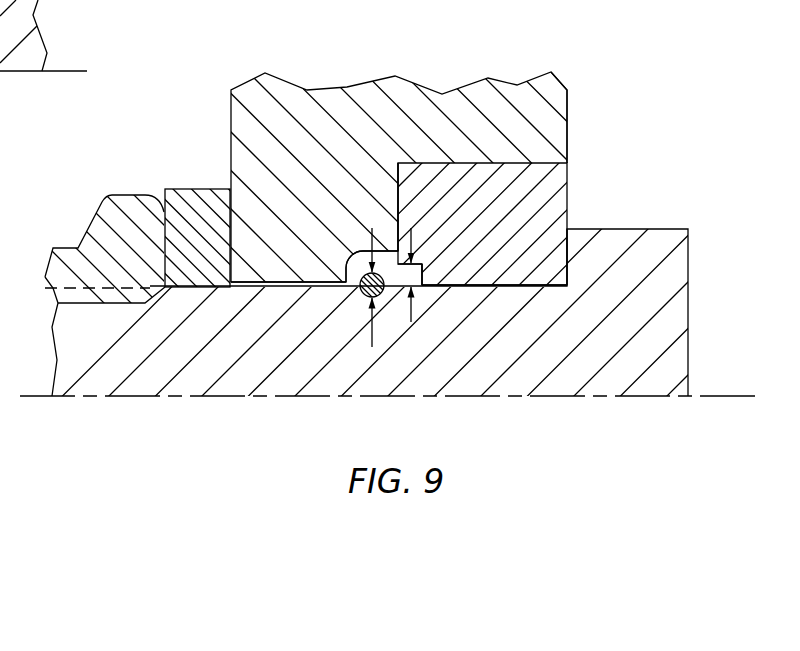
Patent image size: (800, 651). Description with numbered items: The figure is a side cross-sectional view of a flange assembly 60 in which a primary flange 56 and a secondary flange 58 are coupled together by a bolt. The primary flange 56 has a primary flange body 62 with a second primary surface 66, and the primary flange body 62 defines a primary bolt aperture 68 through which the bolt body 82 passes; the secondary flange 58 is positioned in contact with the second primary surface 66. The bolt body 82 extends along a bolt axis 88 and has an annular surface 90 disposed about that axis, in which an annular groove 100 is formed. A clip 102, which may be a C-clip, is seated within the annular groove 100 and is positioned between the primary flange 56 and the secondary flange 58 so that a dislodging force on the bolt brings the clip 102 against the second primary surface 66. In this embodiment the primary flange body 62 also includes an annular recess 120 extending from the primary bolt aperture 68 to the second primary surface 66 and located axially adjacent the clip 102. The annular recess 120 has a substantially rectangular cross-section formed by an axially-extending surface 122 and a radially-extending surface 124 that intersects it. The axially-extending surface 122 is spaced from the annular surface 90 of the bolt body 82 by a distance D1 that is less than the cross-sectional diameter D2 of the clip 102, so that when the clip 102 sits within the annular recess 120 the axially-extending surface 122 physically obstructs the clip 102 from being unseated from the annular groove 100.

The primary flange 56 is at (579, 205).
The secondary flange 58 is at (330, 113).
The flange assembly 60 is at (621, 72).
The primary flange body 62 is at (540, 187).
The second primary surface 66 is at (398, 181).
The primary bolt aperture 68 is at (455, 291).
The bolt body 82 is at (672, 270).
The bolt axis 88 is at (83, 72).
The annular surface 90 is at (290, 280).
The annular groove 100 is at (360, 295).
The clip 102 is at (354, 268).
The annular recess 120 is at (427, 257).
The axially-extending surface 122 is at (422, 262).
The radially-extending surface 124 is at (424, 275).
The distance D1 is at (411, 322).
The cross-sectional diameter D2 is at (372, 347).